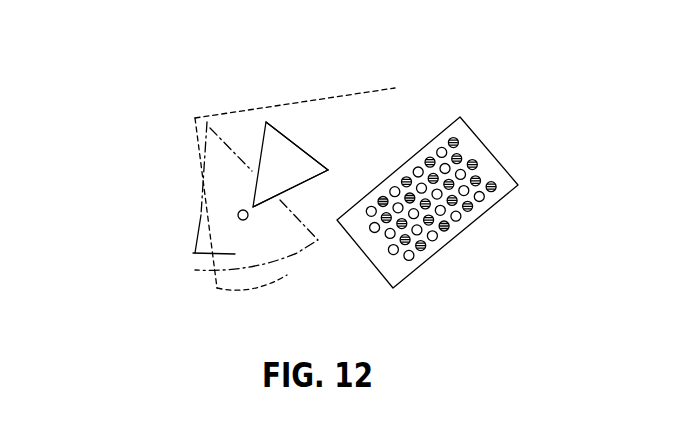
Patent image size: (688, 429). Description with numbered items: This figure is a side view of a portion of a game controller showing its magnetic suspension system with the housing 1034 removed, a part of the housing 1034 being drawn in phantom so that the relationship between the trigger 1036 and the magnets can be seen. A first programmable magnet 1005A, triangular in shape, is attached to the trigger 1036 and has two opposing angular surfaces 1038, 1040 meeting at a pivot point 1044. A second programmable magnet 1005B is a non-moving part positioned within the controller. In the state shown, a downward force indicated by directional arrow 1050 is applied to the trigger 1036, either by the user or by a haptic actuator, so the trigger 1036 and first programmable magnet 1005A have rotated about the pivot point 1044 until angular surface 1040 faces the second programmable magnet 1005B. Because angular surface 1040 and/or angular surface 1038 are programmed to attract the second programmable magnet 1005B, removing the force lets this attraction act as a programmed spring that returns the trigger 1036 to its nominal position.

The housing 1034 is at (318, 100).
The trigger 1036 is at (198, 255).
The angular surface 1038 is at (262, 150).
The angular surface 1040 is at (303, 182).
The pivot point 1044 is at (249, 221).
The directional arrow 1050 is at (203, 220).
The first programmable magnet 1005A is at (292, 152).
The second programmable magnet 1005B is at (458, 227).